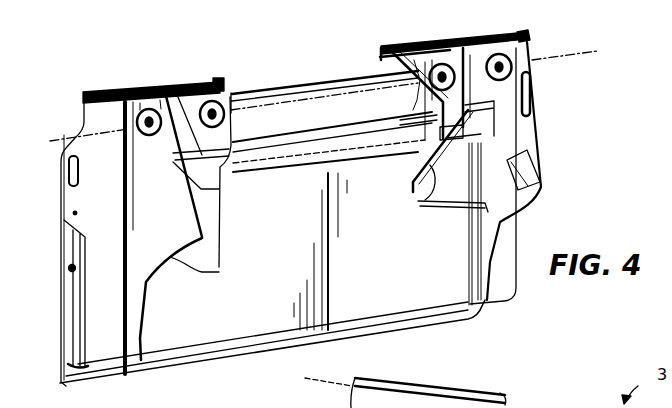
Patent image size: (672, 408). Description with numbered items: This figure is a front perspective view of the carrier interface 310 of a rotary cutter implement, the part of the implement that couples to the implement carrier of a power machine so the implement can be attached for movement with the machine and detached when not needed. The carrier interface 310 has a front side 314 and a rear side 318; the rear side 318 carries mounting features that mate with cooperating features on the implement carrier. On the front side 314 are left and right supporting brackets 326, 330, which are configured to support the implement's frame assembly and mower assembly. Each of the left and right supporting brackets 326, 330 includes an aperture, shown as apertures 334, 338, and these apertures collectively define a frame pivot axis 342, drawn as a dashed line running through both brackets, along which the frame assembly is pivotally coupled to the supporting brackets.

The carrier interface 310 is at (190, 47).
The front side 314 is at (181, 332).
The rear side 318 is at (60, 318).
The left supporting bracket 326 is at (425, 200).
The right supporting bracket 330 is at (219, 267).
The aperture 334 is at (426, 46).
The aperture 338 is at (148, 86).
The frame pivot axis 342 is at (552, 63).